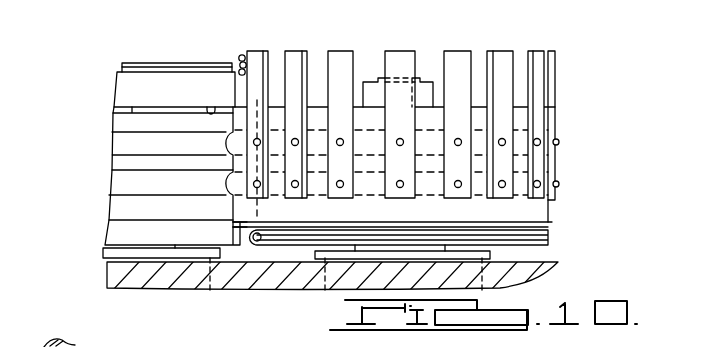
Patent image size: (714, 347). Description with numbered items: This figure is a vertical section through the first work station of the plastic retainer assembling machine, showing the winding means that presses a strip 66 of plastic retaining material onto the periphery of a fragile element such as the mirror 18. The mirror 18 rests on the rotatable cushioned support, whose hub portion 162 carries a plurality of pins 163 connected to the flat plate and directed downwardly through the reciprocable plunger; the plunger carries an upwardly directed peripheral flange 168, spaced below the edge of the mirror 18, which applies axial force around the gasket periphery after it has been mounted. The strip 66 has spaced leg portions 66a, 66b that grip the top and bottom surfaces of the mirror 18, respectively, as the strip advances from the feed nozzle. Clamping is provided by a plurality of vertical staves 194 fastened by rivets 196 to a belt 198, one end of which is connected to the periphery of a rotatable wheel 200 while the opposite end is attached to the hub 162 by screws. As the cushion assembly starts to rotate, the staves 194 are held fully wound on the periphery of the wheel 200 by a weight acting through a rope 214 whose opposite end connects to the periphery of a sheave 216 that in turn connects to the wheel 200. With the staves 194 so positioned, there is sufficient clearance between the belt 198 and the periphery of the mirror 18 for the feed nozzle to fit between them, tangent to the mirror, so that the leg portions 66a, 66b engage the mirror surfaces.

The mirror 18 is at (147, 63).
The peripheral flange 168 is at (118, 88).
The pins 163 is at (207, 113).
The hub portion 162 is at (118, 183).
The belt 198 is at (242, 200).
The strip of plastic retaining material 66 is at (250, 58).
The leg portion 66a is at (243, 55).
The leg portion 66b is at (242, 75).
The vertical staves 194 is at (395, 58).
The rotatable wheel 200 is at (430, 120).
The rivets 196 is at (400, 188).
The sheave 216 is at (545, 234).
The rope 214 is at (343, 238).